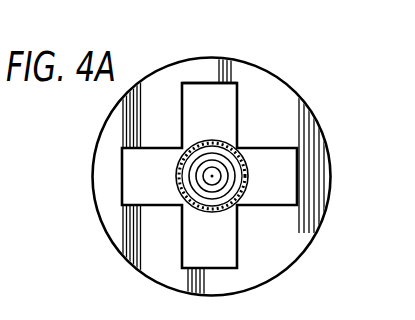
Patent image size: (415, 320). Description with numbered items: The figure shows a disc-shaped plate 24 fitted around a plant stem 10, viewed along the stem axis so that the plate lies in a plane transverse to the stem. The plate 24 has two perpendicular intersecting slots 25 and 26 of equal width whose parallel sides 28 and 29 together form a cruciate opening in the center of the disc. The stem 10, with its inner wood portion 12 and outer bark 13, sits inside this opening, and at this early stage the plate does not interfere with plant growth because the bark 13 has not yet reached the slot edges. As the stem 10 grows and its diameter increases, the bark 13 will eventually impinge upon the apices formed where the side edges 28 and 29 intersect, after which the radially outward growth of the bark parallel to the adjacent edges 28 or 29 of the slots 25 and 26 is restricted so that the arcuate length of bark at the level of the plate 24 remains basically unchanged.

The stem 10 is at (184, 197).
The wood portion 12 is at (175, 150).
The bark 13 is at (231, 207).
The disc-shaped plate 24 is at (298, 112).
The slot 25 is at (213, 83).
The slot 26 is at (292, 160).
The parallel side 28 is at (184, 122).
The parallel side 29 is at (233, 106).